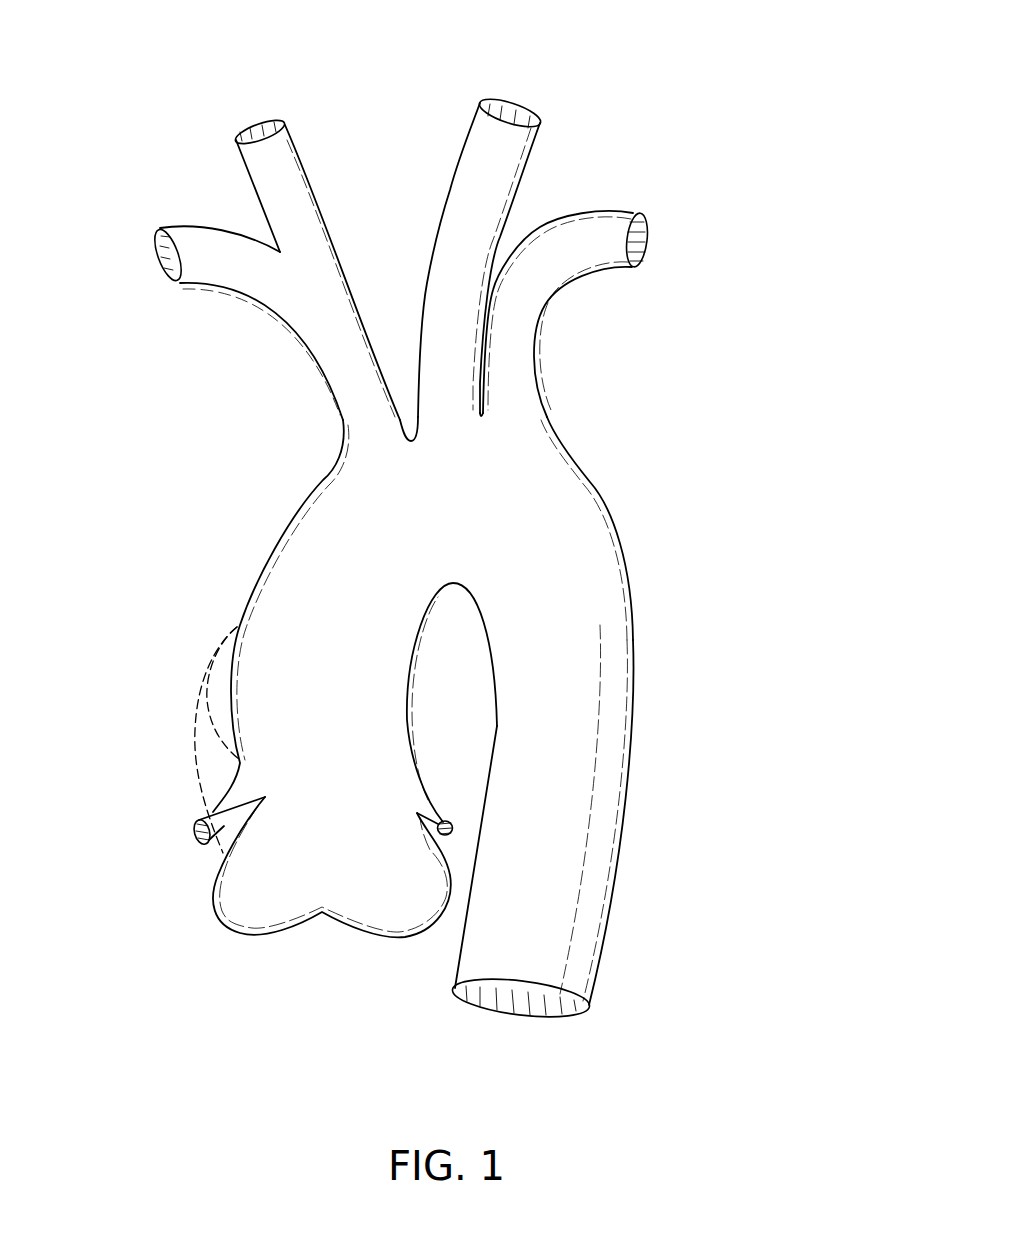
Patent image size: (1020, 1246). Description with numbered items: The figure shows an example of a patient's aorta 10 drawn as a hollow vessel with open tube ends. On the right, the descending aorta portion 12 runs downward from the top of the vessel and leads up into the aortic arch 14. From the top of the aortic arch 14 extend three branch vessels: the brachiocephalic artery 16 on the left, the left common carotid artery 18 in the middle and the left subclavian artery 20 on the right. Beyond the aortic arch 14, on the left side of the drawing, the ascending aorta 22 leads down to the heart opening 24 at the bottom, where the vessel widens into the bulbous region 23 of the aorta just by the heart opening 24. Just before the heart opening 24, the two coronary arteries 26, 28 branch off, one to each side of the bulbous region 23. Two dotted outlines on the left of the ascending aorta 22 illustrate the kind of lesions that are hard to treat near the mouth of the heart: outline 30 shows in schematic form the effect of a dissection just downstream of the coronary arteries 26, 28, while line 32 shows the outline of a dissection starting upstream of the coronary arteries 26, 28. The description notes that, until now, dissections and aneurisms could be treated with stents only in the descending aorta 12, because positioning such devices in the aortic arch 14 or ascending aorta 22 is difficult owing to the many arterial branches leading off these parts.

The aorta 10 is at (623, 117).
The descending aorta portion 12 is at (603, 693).
The aortic arch 14 is at (470, 503).
The brachiocephalic artery 16 is at (295, 310).
The left common carotid artery 18 is at (458, 248).
The left subclavian artery 20 is at (523, 358).
The ascending aorta 22 is at (277, 578).
The bulbous region 23 is at (245, 900).
The heart opening 24 is at (277, 952).
The coronary artery 26 is at (208, 814).
The coronary artery 28 is at (453, 827).
The outline 30 is at (207, 700).
The line 32 is at (195, 744).